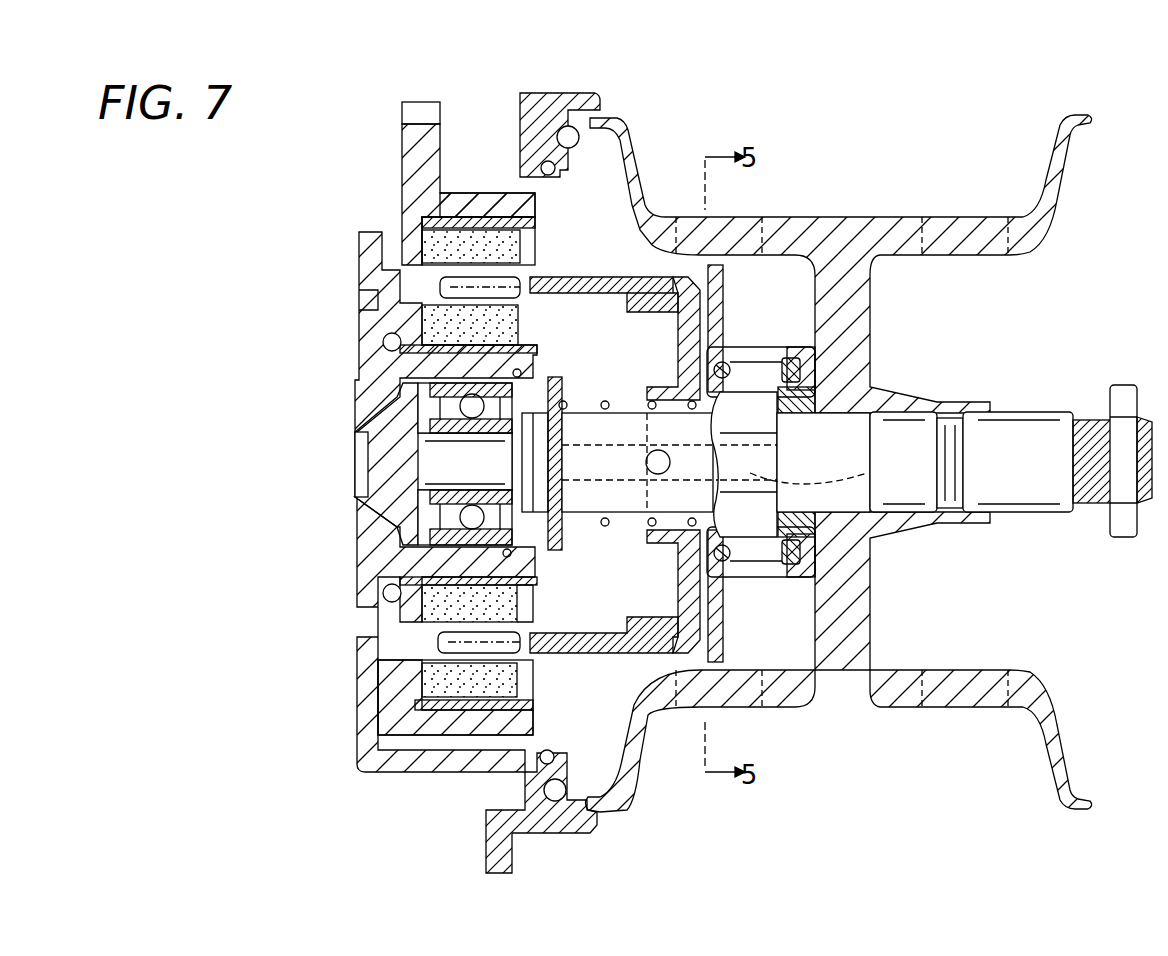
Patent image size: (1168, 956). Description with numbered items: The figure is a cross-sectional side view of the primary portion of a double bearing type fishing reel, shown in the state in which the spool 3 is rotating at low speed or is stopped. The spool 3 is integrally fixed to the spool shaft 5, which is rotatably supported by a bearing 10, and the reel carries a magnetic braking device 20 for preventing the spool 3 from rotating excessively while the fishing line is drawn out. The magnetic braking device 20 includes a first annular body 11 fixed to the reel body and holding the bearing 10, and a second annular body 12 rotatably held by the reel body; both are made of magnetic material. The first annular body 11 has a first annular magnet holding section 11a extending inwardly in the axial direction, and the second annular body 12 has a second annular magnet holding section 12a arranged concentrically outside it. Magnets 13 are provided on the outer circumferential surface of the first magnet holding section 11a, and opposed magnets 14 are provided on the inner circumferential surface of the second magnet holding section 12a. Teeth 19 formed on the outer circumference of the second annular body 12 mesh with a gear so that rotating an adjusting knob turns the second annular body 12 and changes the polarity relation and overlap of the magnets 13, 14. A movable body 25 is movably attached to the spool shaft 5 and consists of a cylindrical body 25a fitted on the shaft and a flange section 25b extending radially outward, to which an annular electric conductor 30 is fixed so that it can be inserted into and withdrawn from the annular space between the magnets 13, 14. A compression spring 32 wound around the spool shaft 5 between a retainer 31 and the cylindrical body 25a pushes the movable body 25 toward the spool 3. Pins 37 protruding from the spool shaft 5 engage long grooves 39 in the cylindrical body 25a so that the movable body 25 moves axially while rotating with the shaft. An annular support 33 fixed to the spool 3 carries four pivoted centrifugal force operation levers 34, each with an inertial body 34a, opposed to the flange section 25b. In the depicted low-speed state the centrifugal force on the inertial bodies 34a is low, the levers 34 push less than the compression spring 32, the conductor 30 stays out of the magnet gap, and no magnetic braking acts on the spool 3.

The spool 3 is at (855, 220).
The spool shaft 5 is at (1020, 425).
The bearing 10 is at (440, 455).
The first annular body 11 is at (362, 560).
The first annular magnet holding section 11a is at (505, 605).
The second annular body 12 is at (402, 140).
The second annular magnet holding section 12a is at (478, 193).
The magnet 13 is at (388, 342).
The magnet 14 is at (413, 235).
The teeth 19 is at (430, 100).
The magnetic braking device 20 is at (548, 240).
The movable body 25 is at (790, 444).
The cylindrical body 25a is at (762, 530).
The flange section 25b is at (690, 348).
The annular electric conductor 30 is at (588, 296).
The retainer 31 is at (562, 390).
The compression spring 32 is at (607, 527).
The annular support 33 is at (748, 350).
The centrifugal force operation lever 34 is at (723, 288).
The inertial body 34a is at (810, 362).
The pin 37 is at (646, 462).
The long groove 39 is at (868, 476).